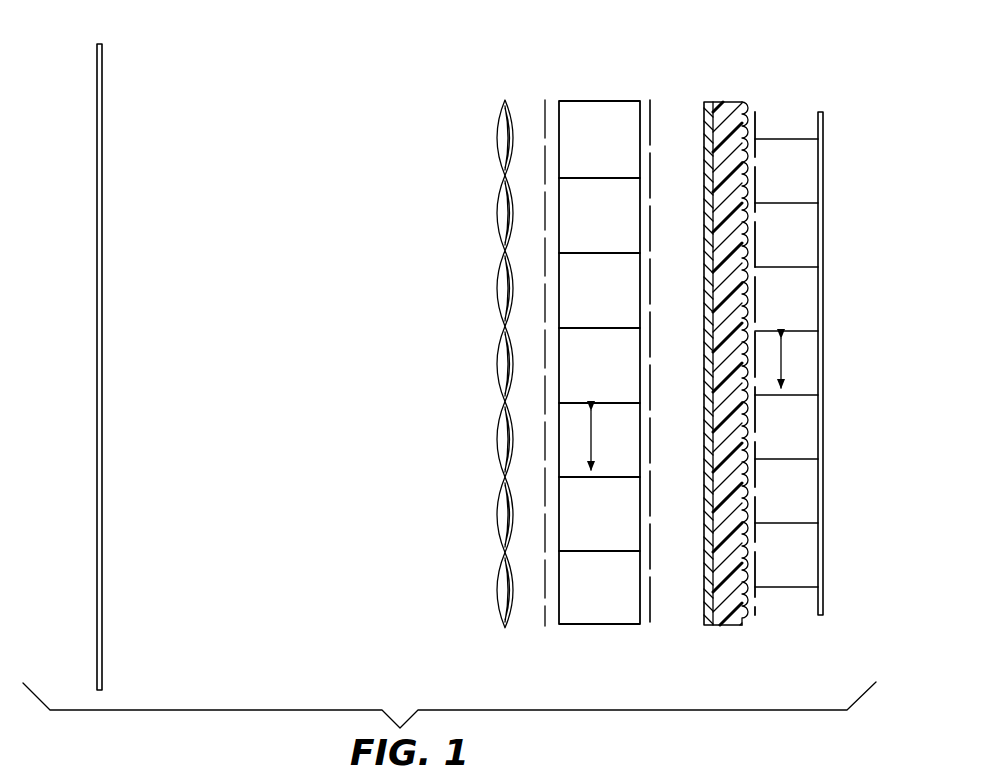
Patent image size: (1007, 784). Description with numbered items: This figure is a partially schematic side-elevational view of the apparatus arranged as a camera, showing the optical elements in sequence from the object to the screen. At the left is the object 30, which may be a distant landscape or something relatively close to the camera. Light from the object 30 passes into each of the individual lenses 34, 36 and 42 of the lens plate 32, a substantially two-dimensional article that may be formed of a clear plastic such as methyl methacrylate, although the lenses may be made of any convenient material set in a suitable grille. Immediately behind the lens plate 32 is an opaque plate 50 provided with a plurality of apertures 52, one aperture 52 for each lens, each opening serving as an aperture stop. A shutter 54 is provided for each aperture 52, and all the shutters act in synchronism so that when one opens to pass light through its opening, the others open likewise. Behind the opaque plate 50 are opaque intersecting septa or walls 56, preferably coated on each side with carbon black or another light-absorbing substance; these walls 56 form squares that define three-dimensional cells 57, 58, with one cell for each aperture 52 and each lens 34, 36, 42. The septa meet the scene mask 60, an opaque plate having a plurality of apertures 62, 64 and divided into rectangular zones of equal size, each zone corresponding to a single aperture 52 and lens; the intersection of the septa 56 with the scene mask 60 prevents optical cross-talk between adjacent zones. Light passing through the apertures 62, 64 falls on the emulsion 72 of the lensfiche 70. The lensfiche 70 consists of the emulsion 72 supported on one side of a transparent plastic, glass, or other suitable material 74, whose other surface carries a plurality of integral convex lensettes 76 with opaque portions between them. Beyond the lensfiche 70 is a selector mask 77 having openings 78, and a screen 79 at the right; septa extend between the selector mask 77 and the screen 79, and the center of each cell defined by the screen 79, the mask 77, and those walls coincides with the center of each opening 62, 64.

The object 30 is at (102, 232).
The lens plate 32 is at (471, 344).
The lens 34 is at (497, 140).
The lens 36 is at (497, 208).
The lens 42 is at (497, 452).
The opaque plate 50 is at (547, 100).
The aperture 52 is at (546, 136).
The shutter 54 is at (546, 508).
The septa 56 is at (598, 367).
The cell 57 is at (580, 298).
The cell 58 is at (584, 370).
The scene mask 60 is at (651, 122).
The aperture 62 is at (650, 165).
The aperture 64 is at (652, 236).
The lensfiche 70 is at (702, 370).
The emulsion 72 is at (704, 600).
The transparent material 74 is at (721, 101).
The convex lensettes 76 is at (743, 158).
The selector mask 77 is at (816, 349).
The opening 78 is at (757, 170).
The screen 79 is at (823, 166).